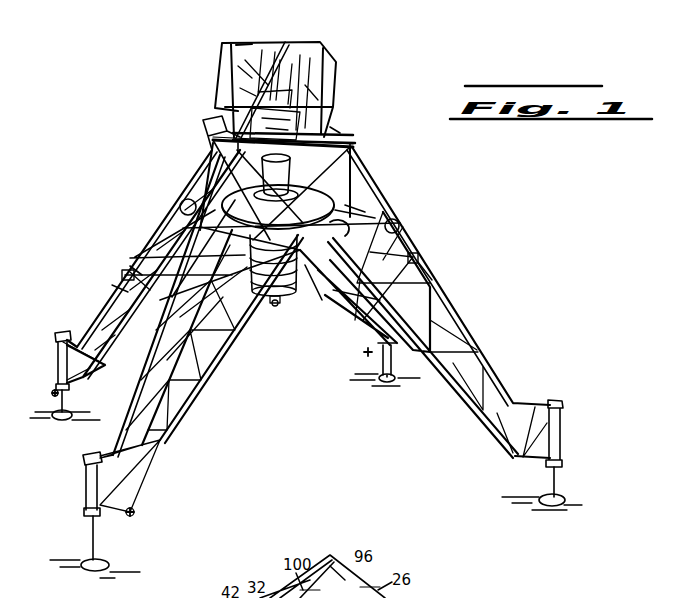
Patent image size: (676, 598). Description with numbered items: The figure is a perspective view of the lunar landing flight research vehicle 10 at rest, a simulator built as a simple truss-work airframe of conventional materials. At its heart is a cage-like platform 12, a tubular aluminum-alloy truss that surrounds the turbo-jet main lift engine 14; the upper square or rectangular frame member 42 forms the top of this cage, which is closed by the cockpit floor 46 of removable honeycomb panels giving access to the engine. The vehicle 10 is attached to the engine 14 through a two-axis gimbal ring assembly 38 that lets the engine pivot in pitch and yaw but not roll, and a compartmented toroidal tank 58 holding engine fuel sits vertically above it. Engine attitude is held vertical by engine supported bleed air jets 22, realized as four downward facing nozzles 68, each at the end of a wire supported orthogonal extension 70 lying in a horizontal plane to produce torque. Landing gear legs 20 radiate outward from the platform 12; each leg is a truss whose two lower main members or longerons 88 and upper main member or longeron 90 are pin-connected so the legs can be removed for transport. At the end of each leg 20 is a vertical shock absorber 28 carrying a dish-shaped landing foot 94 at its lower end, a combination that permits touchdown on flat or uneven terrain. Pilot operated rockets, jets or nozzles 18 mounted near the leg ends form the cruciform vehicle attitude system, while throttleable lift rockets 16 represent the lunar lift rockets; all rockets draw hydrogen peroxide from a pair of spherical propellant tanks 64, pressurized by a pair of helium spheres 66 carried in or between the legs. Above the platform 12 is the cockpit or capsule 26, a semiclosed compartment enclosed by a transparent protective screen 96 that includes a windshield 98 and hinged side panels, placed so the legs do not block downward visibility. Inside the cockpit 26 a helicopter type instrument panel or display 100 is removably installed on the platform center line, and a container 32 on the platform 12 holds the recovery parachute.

The lunar landing flight research vehicle 10 is at (171, 162).
The cage-like platform 12 is at (355, 209).
The turbo-jet main lift engine 14 is at (306, 172).
The throttleable lift rockets 16 is at (338, 230).
The pilot operated rockets, jets or nozzles 18 is at (51, 399).
The landing gear legs 20 is at (136, 254).
The engine supported bleed air jets 22 is at (114, 280).
The cockpit or capsule 26 is at (336, 51).
The shock absorber 28 is at (50, 363).
The container 32 is at (204, 128).
The two-axis gimbal ring assembly 38 is at (366, 216).
The upper square or rectangular frame member 42 is at (353, 144).
The cockpit floor 46 is at (330, 133).
The compartmented toroidal tank 58 is at (269, 220).
The spherical propellant tanks 64 is at (263, 197).
The helium spheres 66 is at (180, 213).
The downward facing nozzles 68 is at (120, 286).
The wire supported orthogonal extension 70 is at (136, 270).
The lower main members or longerons 88 is at (101, 353).
The upper main member or longeron 90 is at (187, 186).
The dish-shaped landing foot 94 is at (62, 418).
The transparent protective screen 96 is at (244, 58).
The windshield 98 is at (238, 72).
The helicopter type instrument panel or display 100 is at (240, 92).